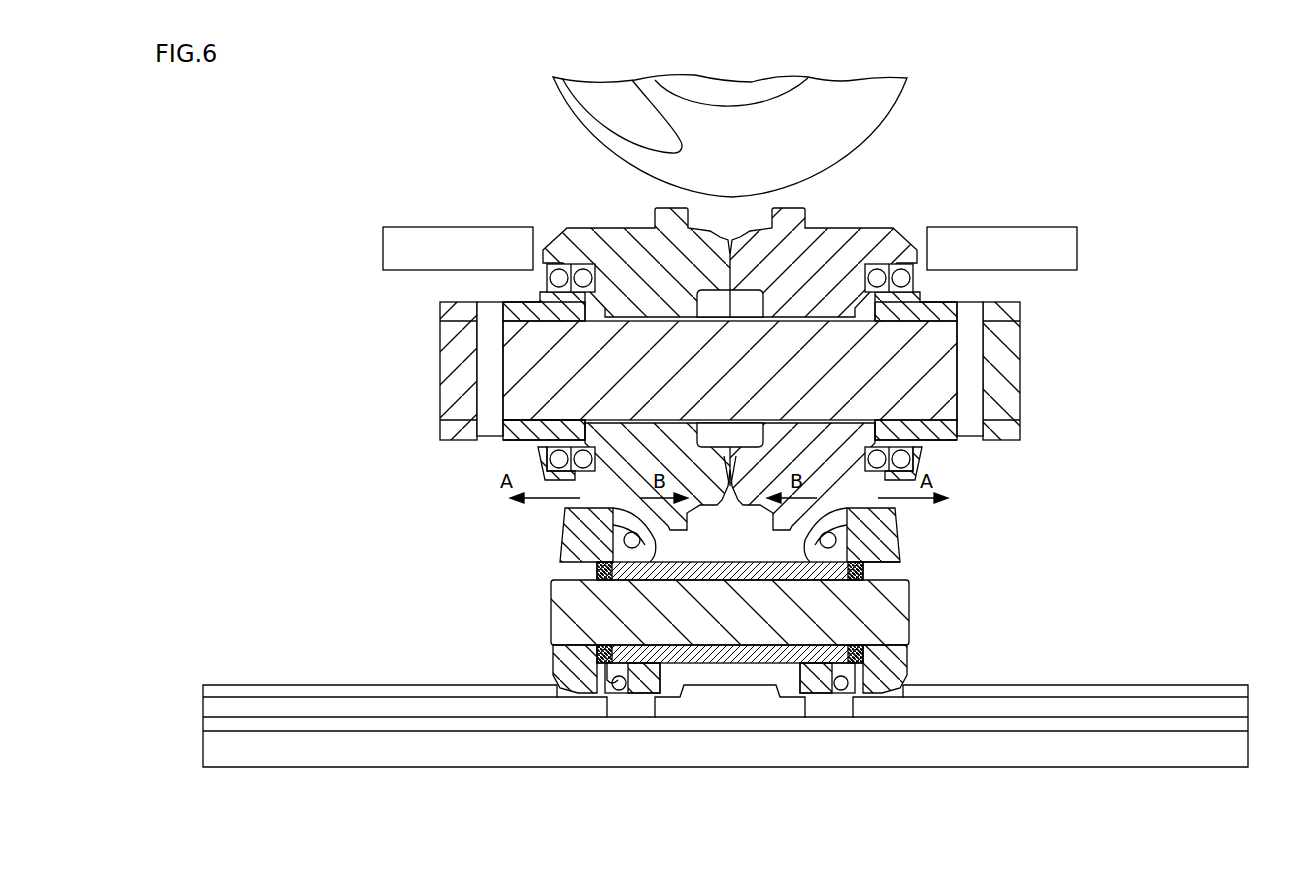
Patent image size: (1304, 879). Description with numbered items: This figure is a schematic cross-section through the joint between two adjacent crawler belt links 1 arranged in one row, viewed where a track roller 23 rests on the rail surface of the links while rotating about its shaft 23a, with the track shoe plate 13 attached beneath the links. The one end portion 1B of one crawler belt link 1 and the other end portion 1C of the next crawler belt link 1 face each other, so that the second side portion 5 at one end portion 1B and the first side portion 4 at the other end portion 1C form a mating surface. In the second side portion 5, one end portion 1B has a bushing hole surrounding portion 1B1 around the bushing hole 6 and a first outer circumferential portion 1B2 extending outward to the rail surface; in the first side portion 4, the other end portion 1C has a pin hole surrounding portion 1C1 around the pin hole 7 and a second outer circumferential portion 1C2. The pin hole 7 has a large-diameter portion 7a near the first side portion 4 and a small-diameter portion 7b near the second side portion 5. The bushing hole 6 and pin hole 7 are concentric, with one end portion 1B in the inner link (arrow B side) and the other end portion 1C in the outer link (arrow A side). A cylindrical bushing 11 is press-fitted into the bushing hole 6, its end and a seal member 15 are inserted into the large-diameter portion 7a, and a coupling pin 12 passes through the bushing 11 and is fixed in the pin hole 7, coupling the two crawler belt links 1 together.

The crawler belt link 1 is at (912, 660).
The one end portion 1B is at (653, 680).
The bushing hole surrounding portion 1B1 is at (832, 548).
The first outer circumferential portion 1B2 is at (830, 506).
The other end portion 1C is at (583, 673).
The pin hole surrounding portion 1C1 is at (870, 556).
The second outer circumferential portion 1C2 is at (838, 528).
The first side portion 4 is at (613, 673).
The second side portion 5 is at (628, 693).
The bushing hole 6 is at (605, 540).
The pin hole 7 is at (561, 543).
The large-diameter portion 7a is at (640, 553).
The small-diameter portion 7b is at (603, 565).
The bushing 11 is at (860, 573).
The coupling pin 12 is at (883, 613).
The track shoe plate 13 is at (1232, 750).
The seal member 15 is at (860, 653).
The track roller 23 is at (620, 250).
The shaft 23a is at (932, 373).